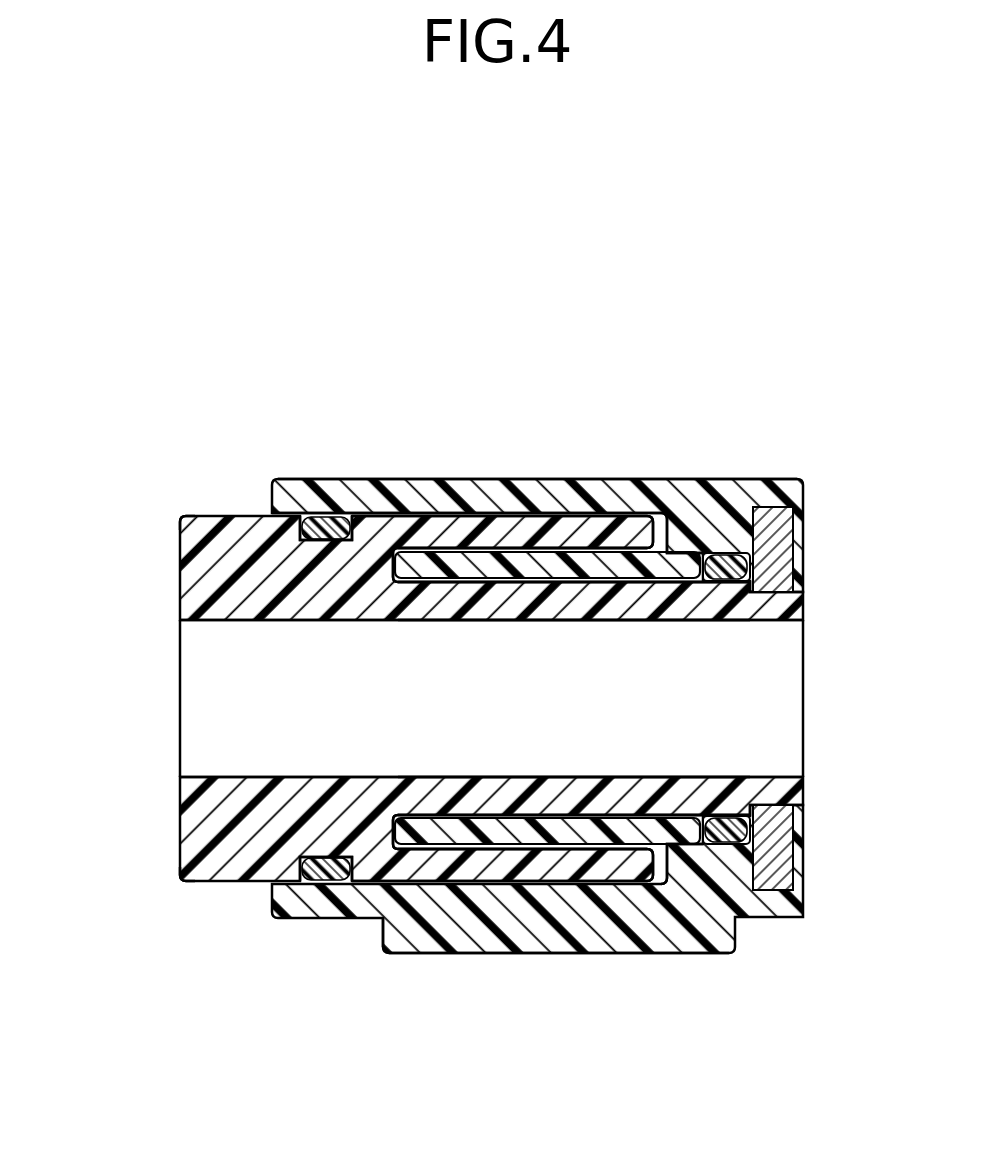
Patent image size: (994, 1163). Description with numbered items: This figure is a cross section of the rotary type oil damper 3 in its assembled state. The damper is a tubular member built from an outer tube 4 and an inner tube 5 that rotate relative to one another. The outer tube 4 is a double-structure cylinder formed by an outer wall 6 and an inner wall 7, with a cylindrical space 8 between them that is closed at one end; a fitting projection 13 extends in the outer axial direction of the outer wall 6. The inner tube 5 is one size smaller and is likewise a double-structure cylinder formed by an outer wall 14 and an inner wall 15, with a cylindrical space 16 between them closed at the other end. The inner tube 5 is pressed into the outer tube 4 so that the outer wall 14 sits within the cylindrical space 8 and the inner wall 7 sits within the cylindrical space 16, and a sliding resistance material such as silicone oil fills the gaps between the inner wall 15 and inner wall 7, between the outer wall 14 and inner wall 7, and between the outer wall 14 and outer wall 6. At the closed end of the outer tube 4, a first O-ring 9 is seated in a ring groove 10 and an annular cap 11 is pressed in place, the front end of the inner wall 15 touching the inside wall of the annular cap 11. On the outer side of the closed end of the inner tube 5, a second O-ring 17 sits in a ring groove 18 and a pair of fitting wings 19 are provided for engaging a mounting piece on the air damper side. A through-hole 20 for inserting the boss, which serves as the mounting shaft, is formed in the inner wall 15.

The rotary type oil damper 3 is at (287, 378).
The outer tube 4 is at (792, 425).
The inner tube 5 is at (152, 558).
The outer wall 6 is at (432, 482).
The inner wall 7 is at (478, 583).
The cylindrical space 8 is at (665, 515).
The first O-ring 9 is at (728, 855).
The ring groove 10 is at (683, 842).
The annular cap 11 is at (787, 847).
The fitting projection 13 is at (553, 938).
The outer wall 14 is at (570, 523).
The inner wall 15 is at (575, 605).
The cylindrical space 16 is at (392, 586).
The second O-ring 17 is at (325, 880).
The ring groove 18 is at (296, 852).
The fitting wings 19 is at (183, 520).
The through-hole 20 is at (188, 692).